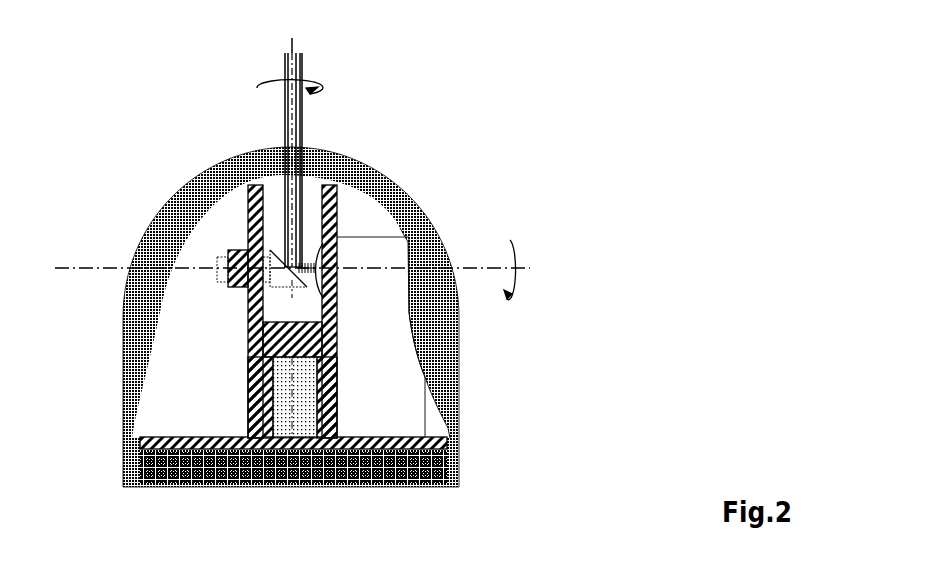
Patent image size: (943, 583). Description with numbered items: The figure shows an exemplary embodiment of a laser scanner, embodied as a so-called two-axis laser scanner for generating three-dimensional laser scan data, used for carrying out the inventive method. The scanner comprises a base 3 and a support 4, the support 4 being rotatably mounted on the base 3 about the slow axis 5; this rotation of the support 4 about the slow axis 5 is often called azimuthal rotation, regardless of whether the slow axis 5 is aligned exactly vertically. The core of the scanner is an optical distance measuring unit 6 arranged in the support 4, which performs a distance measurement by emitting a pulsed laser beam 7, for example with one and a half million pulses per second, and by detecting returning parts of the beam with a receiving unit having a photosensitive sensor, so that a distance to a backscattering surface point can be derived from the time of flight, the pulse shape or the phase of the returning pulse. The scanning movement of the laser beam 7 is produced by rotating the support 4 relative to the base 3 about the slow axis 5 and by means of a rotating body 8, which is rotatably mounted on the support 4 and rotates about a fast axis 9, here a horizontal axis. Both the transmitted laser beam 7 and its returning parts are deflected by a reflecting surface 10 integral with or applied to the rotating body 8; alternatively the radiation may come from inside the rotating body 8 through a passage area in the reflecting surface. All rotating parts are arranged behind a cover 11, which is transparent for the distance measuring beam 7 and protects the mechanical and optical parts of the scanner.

The base 3 is at (462, 430).
The support 4 is at (445, 372).
The slow axis 5 is at (477, 84).
The optical distance measuring unit 6 is at (558, 401).
The pulsed laser beam 7 is at (470, 68).
The rotating body 8 is at (403, 258).
The fast axis 9 is at (707, 270).
The reflecting surface 10 is at (490, 278).
The cover 11 is at (320, 385).